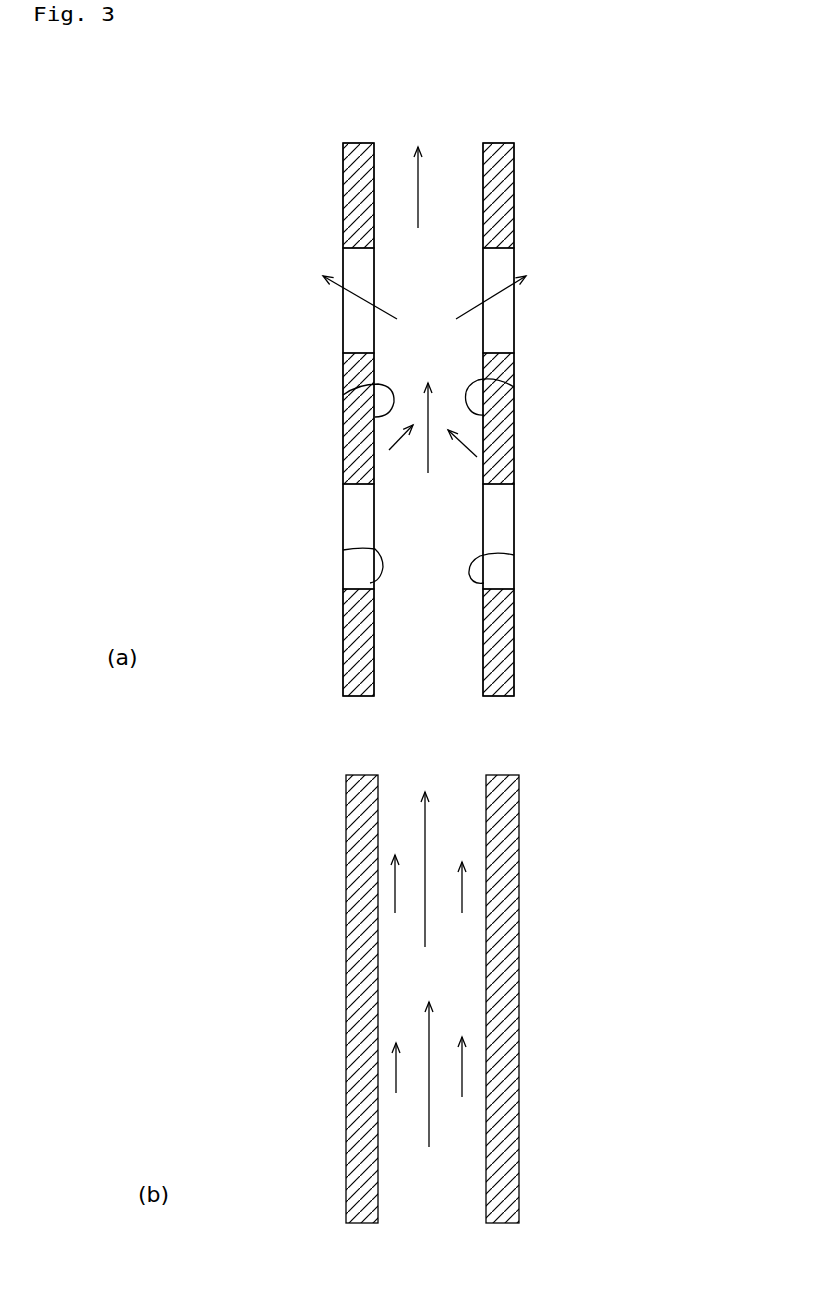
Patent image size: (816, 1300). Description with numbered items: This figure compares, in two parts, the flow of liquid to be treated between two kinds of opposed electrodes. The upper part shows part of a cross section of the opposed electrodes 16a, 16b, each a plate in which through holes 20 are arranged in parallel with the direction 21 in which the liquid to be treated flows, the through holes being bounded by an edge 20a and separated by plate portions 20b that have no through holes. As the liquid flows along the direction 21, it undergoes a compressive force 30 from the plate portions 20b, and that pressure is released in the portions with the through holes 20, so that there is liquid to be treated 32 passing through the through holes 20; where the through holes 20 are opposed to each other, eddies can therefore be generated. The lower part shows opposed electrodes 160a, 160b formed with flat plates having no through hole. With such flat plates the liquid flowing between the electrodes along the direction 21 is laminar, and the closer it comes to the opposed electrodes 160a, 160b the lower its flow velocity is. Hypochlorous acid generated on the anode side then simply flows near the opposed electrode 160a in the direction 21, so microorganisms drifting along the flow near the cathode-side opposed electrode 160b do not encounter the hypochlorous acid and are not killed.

The opposed electrode 16a is at (343, 160).
The opposed electrode 16b is at (513, 143).
The through hole 20 is at (350, 262).
The edge 20a is at (360, 550).
The plate portion 20b is at (345, 394).
The direction in which the liquid to be treated flows 21 is at (428, 650).
The compressive force 30 is at (395, 440).
The liquid to be treated passing through the through holes 32 is at (358, 297).
The opposed electrode 160a is at (346, 877).
The opposed electrode 160b is at (519, 875).